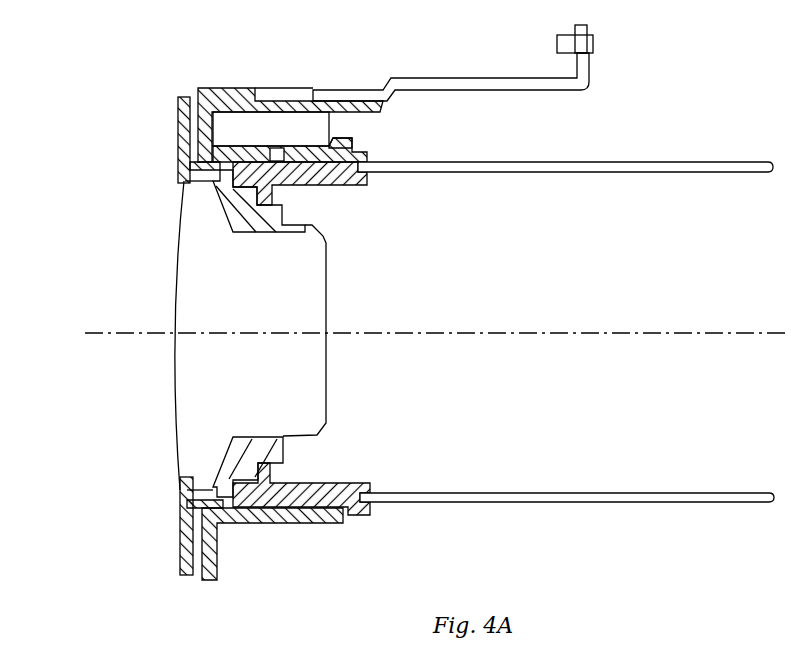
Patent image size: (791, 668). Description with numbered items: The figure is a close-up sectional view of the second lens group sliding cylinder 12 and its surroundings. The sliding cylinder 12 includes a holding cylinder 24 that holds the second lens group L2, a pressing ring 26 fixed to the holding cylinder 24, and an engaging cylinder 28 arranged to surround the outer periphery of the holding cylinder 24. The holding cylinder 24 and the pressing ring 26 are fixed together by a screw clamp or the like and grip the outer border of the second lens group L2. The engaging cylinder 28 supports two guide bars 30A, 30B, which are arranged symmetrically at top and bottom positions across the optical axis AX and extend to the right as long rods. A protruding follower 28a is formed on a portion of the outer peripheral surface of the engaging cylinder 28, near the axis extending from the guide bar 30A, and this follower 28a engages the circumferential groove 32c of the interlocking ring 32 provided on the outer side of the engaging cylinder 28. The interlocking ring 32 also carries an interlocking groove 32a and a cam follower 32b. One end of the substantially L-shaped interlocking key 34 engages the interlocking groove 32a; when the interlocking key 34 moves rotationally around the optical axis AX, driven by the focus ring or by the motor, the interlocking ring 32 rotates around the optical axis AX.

The second lens group sliding cylinder 12 is at (105, 411).
The holding cylinder 24 is at (213, 484).
The pressing ring 26 is at (178, 508).
The engaging cylinder 28 is at (236, 310).
The follower 28a is at (263, 148).
The guide bar 30A is at (497, 172).
The guide bar 30B is at (500, 502).
The interlocking ring 32 is at (198, 88).
The interlocking groove 32a is at (257, 89).
The cam follower 32b is at (354, 138).
The circumferential groove 32c is at (282, 147).
The interlocking key 34 is at (477, 78).
The second lens group L2 is at (176, 277).
The optical axis AX is at (373, 332).